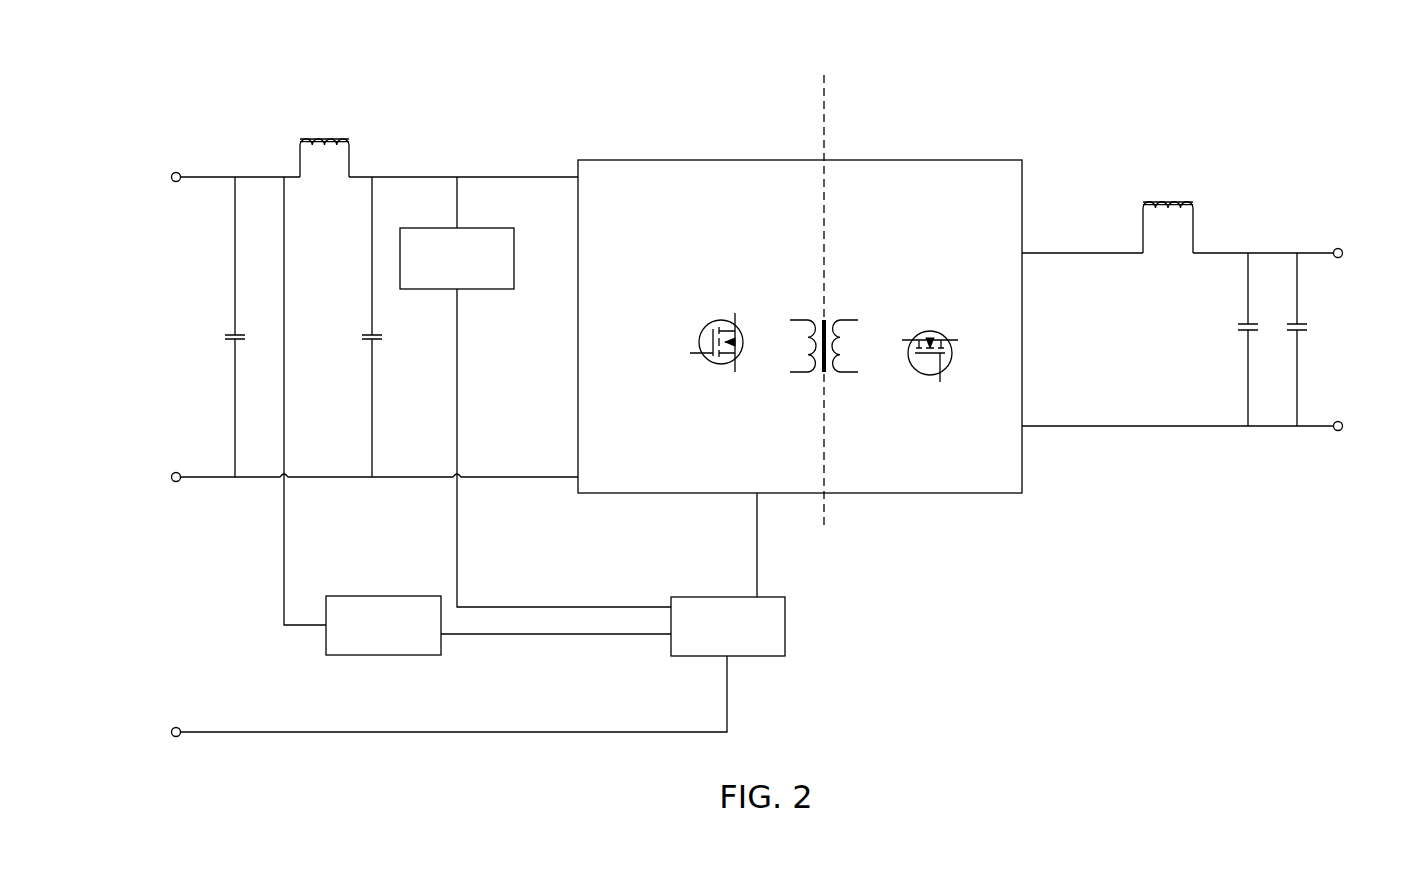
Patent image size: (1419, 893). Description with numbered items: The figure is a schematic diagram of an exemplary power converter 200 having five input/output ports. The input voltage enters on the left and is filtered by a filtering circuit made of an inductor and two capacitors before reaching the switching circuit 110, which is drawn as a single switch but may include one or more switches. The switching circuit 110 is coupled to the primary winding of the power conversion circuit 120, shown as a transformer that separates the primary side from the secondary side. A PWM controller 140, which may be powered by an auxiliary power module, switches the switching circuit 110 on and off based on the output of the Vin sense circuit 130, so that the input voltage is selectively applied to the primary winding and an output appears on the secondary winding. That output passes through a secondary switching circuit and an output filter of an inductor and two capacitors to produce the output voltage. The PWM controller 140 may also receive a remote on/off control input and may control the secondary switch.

The power converter 200 is at (386, 44).
The switching circuit 110 is at (692, 266).
The power conversion circuit 120 is at (818, 270).
The Vin sense circuit 130 is at (382, 657).
The PWM controller 140 is at (697, 660).